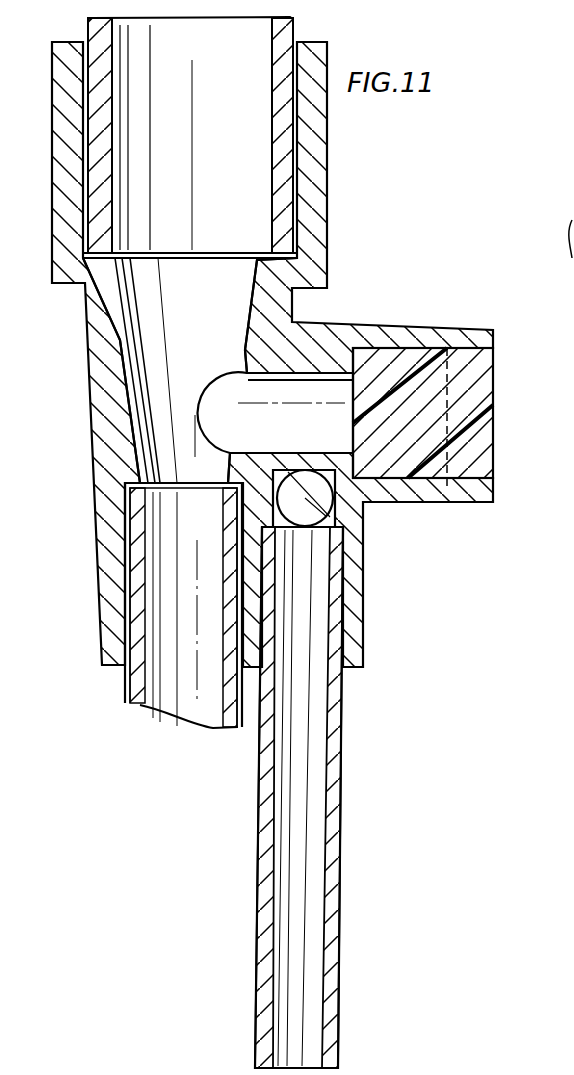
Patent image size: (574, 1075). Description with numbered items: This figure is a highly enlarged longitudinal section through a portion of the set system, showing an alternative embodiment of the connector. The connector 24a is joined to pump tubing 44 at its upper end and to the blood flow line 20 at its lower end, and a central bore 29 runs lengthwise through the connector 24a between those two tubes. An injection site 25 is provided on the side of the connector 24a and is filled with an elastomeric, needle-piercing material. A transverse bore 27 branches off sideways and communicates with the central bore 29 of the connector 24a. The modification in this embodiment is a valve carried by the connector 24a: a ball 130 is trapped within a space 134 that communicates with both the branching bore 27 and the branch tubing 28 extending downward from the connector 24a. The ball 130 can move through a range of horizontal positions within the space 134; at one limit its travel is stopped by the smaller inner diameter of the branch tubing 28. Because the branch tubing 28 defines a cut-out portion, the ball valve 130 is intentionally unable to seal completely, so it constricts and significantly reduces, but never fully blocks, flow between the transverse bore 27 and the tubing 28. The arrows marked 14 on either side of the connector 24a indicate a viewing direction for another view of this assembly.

The pump tubing 44 is at (283, 40).
The central bore 29 is at (160, 353).
The space 134 is at (293, 450).
The section line 14 is at (72, 503).
The transverse bore 27 is at (305, 393).
The injection site 25 is at (430, 370).
The ball 130 is at (335, 513).
The connector 24a is at (364, 572).
The blood flow line 20 is at (137, 683).
The branch tubing 28 is at (337, 773).